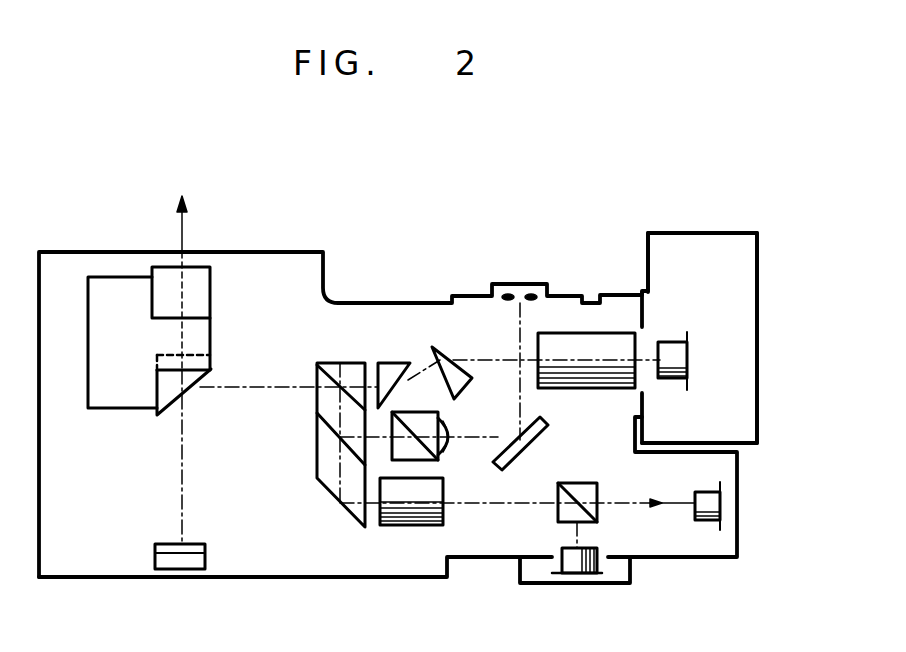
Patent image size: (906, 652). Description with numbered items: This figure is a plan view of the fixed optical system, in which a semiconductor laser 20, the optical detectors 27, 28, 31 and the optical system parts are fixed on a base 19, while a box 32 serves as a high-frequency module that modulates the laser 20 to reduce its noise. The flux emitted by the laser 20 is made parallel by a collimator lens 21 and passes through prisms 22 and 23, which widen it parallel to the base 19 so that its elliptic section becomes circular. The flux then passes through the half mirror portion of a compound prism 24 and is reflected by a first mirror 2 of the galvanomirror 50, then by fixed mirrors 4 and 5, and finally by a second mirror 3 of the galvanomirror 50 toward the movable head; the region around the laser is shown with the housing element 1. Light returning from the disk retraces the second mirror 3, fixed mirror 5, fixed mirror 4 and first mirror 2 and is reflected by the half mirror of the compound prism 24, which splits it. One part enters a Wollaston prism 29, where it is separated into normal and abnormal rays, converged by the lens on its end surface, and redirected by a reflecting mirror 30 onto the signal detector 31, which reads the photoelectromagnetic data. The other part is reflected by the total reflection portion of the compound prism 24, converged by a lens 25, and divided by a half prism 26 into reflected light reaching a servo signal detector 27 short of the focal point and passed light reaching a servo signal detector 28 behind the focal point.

The semiconductor laser 1 is at (102, 365).
The first mirror 2 is at (172, 412).
The second mirror 3 is at (202, 283).
The fixed mirror 4 is at (182, 568).
The fixed mirror 5 is at (212, 307).
The base 19 is at (115, 252).
The semiconductor laser 20 is at (682, 355).
The collimator lens 21 is at (608, 343).
The prism 22 is at (443, 348).
The prism 23 is at (393, 368).
The compound prism 24 is at (322, 482).
The lens 25 is at (423, 527).
The half prism 26 is at (600, 515).
The servo signal detector 27 is at (578, 575).
The servo signal detector 28 is at (711, 520).
The Wollaston prism 29 is at (433, 460).
The reflecting mirror 30 is at (512, 464).
The signal detector 31 is at (534, 298).
The box 32 is at (716, 243).
The galvanomirror 50 is at (220, 350).